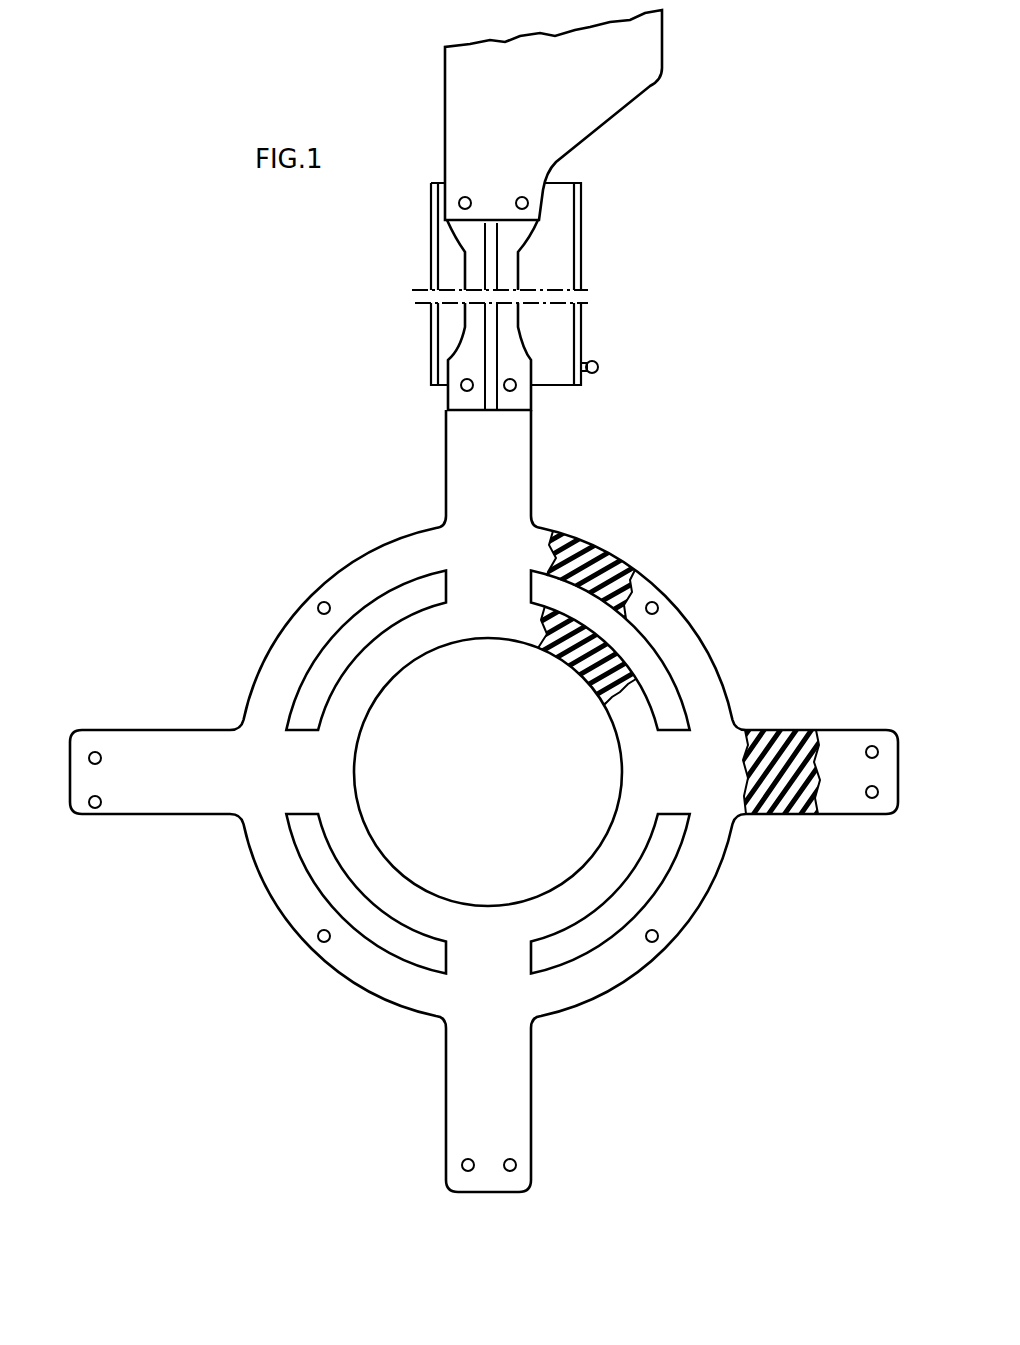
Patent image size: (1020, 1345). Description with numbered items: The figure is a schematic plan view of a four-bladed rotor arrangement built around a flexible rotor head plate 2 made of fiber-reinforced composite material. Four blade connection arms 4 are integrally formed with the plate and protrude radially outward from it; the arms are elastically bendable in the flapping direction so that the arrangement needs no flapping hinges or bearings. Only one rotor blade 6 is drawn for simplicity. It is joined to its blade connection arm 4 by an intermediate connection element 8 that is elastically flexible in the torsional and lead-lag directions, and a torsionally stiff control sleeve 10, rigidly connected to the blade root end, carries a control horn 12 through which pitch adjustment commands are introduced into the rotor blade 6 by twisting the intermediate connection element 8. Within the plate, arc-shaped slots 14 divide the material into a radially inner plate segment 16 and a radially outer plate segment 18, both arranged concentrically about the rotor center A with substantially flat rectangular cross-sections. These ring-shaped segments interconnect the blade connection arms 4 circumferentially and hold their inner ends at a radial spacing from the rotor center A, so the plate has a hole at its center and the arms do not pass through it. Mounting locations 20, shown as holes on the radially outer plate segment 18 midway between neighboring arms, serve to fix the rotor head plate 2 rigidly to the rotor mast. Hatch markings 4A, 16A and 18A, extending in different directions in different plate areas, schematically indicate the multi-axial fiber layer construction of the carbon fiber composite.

The rotor head plate 2 is at (608, 539).
The blade connection arms 4 is at (458, 455).
The hatch markings 4A is at (783, 813).
The rotor blade 6 is at (640, 75).
The intermediate connection element 8 is at (512, 357).
The control sleeve 10 is at (577, 245).
The control horn 12 is at (598, 362).
The arc-shaped slots 14 is at (658, 693).
The radially inner plate segment 16 is at (330, 727).
The hatch markings 16A is at (610, 653).
The radially outer plate segment 18 is at (290, 650).
The hatch markings 18A is at (607, 562).
The mounting locations 20 is at (320, 603).
The rotor center A is at (487, 777).